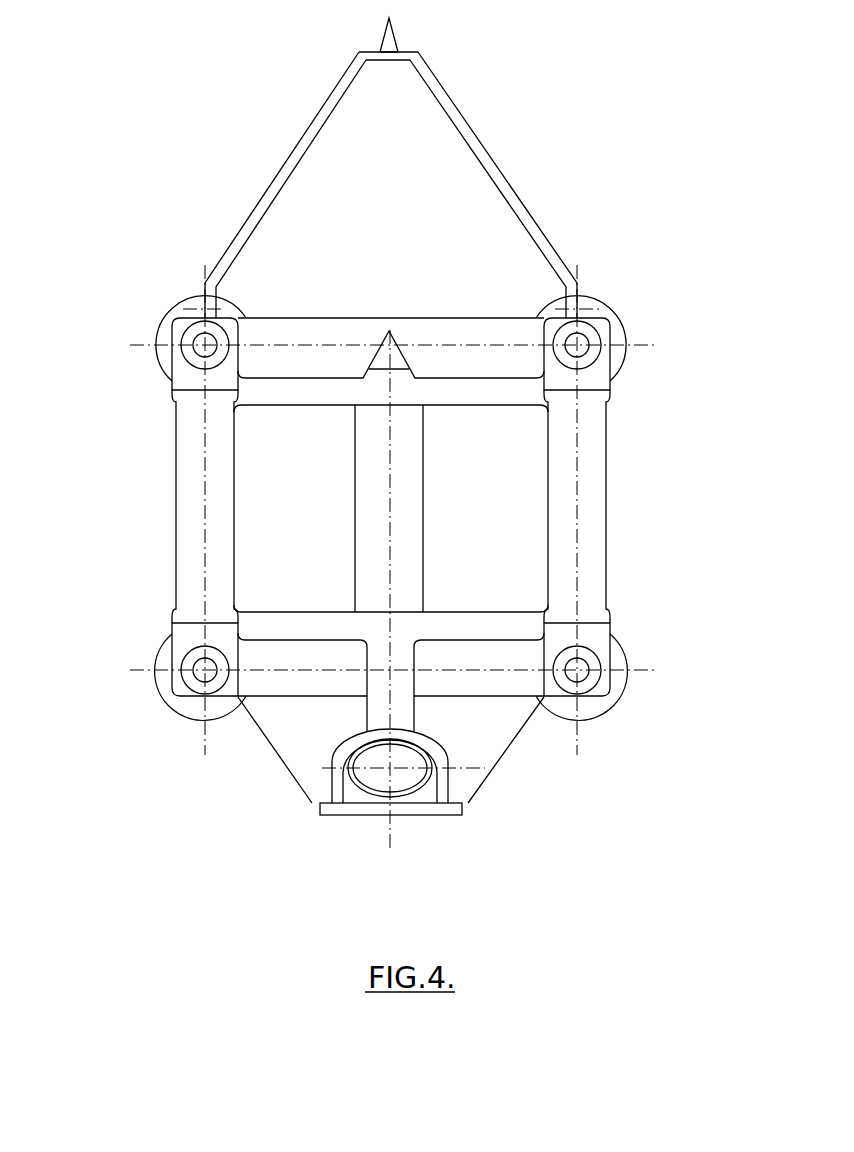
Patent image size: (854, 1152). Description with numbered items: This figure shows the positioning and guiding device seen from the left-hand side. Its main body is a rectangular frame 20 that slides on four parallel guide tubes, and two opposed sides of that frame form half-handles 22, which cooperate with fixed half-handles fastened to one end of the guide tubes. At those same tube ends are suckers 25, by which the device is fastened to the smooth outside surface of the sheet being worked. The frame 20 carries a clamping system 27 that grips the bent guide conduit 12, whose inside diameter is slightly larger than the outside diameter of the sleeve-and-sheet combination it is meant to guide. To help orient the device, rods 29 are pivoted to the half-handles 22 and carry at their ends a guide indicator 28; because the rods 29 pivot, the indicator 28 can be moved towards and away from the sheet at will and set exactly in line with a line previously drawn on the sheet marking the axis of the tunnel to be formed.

The bent guide conduit 12 is at (373, 797).
The rectangular frame 20 is at (295, 316).
The half-handles 22 is at (188, 497).
The suckers 25 is at (183, 298).
The clamping system 27 is at (452, 778).
The guide indicator 28 is at (402, 45).
The rods 29 is at (292, 163).